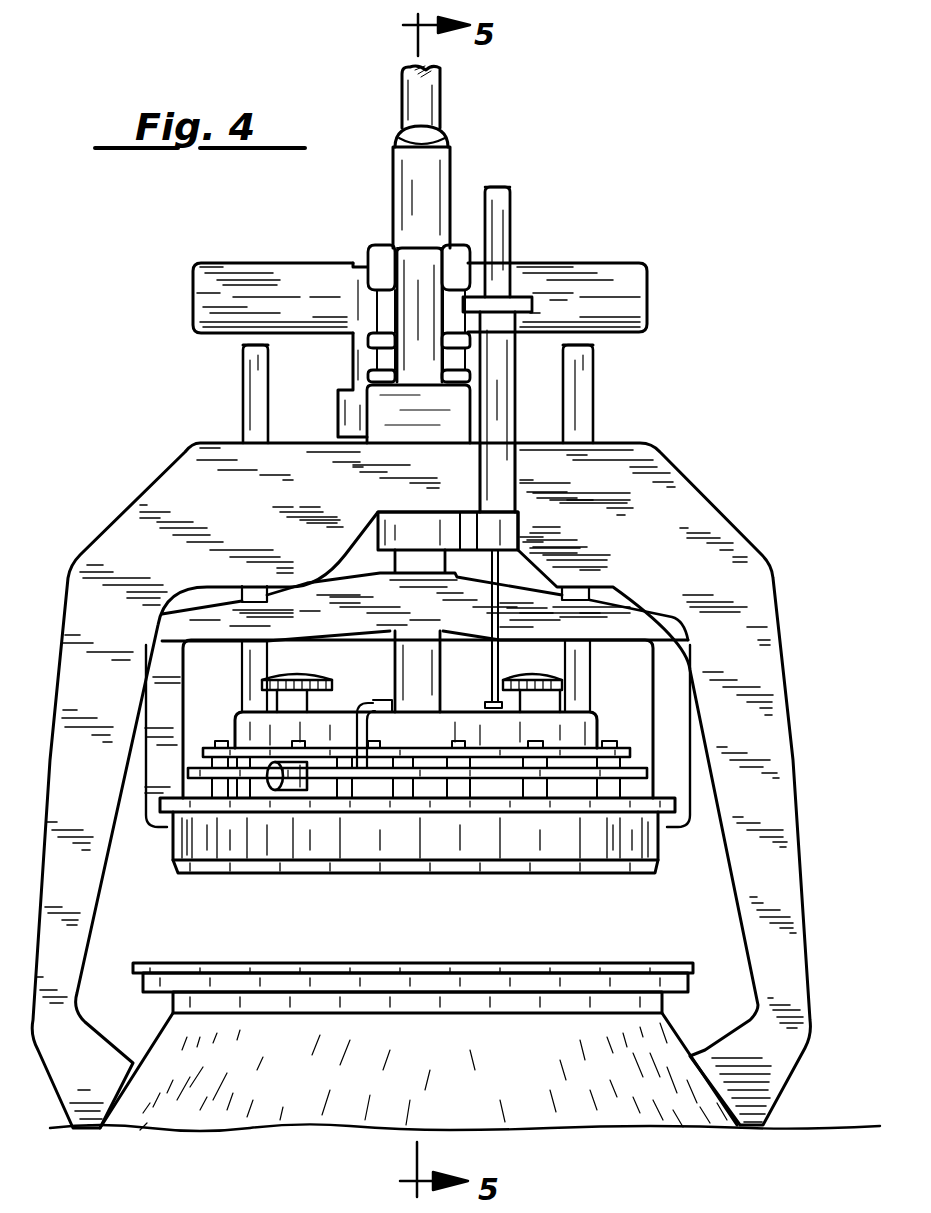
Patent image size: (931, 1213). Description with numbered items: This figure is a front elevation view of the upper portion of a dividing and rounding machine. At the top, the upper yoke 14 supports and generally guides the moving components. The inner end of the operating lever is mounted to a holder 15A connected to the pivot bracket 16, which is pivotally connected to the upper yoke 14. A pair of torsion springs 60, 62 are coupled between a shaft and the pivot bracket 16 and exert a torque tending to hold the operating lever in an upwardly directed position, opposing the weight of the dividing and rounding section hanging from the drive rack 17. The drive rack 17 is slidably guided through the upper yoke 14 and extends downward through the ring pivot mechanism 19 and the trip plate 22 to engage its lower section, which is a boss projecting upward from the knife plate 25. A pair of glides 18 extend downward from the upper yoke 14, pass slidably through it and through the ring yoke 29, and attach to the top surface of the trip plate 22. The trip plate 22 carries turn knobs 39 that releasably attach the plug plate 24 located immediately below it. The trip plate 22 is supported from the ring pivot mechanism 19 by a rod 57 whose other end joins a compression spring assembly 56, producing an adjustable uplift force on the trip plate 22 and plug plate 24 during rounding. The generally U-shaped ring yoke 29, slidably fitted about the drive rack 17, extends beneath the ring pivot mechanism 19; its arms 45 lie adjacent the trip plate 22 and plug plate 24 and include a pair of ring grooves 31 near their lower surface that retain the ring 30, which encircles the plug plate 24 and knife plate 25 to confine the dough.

The upper yoke 14 is at (668, 512).
The holder 15A is at (440, 155).
The pivot bracket 16 is at (362, 270).
The drive rack 17 is at (410, 360).
The glides 18 is at (248, 410).
The ring pivot mechanism 19 is at (393, 530).
The trip plate 22 is at (592, 715).
The plug plate 24 is at (477, 752).
The knife plate 25 is at (617, 740).
The ring yoke 29 is at (620, 617).
The ring 30 is at (658, 862).
The ring grooves 31 is at (157, 803).
The turn knobs 39 is at (290, 672).
The arms 45 is at (172, 698).
The compression spring assembly 56 is at (495, 405).
The rod 57 is at (492, 672).
The torsion spring 60 is at (250, 287).
The torsion spring 62 is at (580, 285).